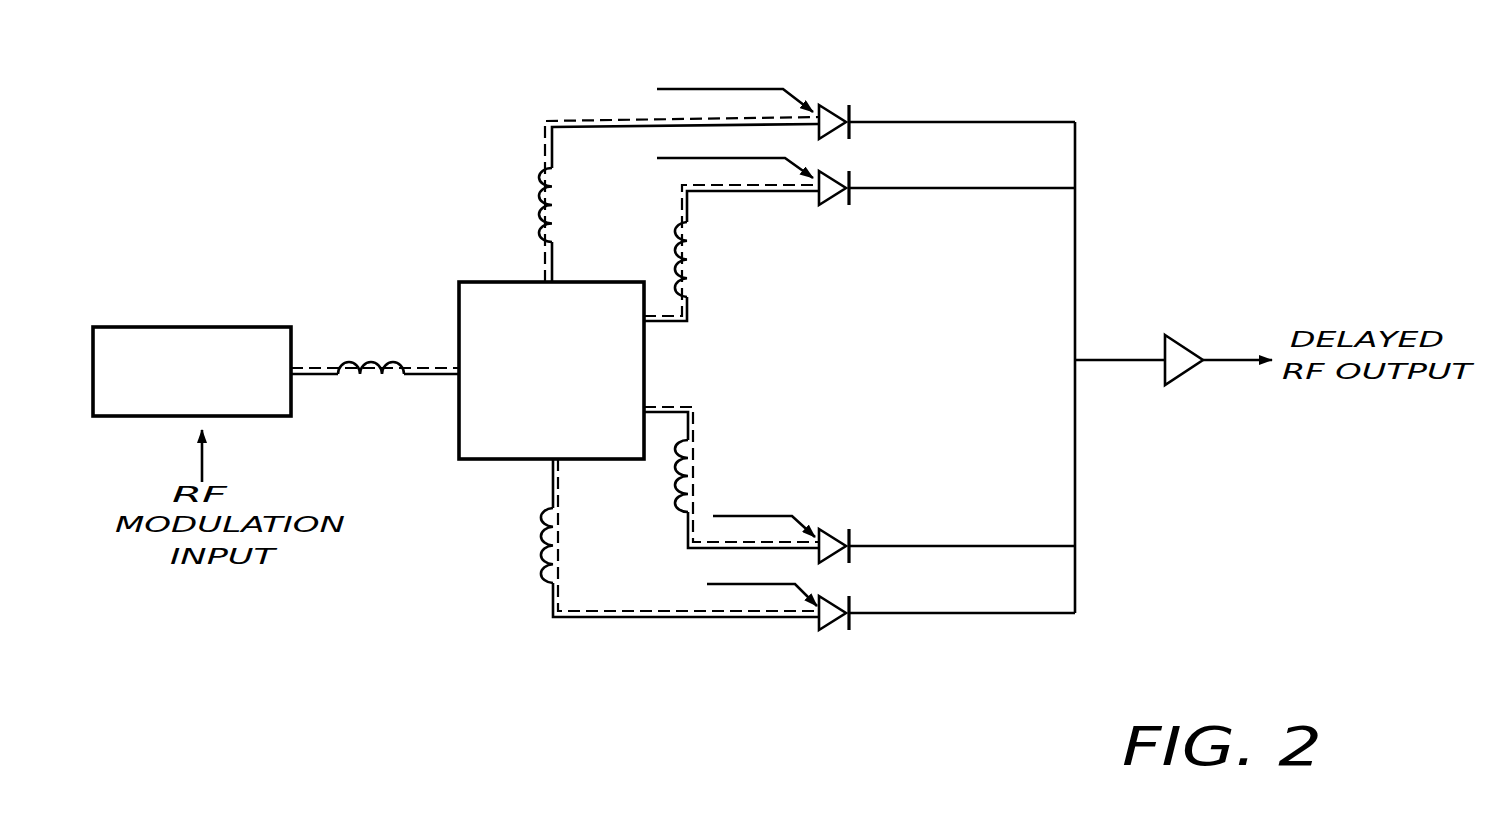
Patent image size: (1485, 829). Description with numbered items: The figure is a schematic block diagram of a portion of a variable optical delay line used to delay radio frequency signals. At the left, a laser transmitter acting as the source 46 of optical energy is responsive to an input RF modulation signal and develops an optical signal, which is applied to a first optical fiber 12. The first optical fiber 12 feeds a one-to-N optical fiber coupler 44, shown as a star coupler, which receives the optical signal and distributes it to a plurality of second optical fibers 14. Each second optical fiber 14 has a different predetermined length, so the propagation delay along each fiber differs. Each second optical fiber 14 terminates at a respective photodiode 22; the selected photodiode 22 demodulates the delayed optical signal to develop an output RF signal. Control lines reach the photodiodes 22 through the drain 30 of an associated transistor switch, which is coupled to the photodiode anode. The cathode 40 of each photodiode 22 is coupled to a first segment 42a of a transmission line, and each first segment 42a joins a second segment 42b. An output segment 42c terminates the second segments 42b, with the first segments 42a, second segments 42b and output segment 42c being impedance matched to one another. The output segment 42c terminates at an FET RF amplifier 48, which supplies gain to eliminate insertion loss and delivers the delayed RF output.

The first optical fiber 12 is at (343, 368).
The second optical fibers 14 is at (540, 207).
The photodiodes 22 is at (828, 139).
The drain 30 is at (738, 89).
The cathode 40 is at (849, 106).
The first segments 42a is at (990, 121).
The second segments 42b is at (1075, 257).
The output segment 42c is at (1118, 358).
The optical fiber coupler 44 is at (487, 462).
The source of optical energy 46 is at (218, 327).
The RF amplifier 48 is at (1182, 378).